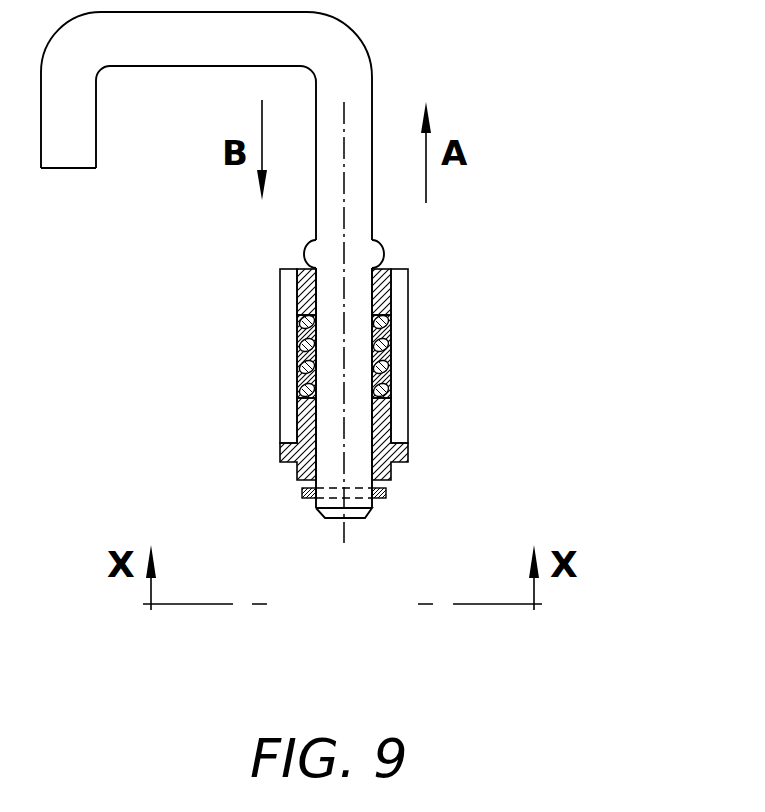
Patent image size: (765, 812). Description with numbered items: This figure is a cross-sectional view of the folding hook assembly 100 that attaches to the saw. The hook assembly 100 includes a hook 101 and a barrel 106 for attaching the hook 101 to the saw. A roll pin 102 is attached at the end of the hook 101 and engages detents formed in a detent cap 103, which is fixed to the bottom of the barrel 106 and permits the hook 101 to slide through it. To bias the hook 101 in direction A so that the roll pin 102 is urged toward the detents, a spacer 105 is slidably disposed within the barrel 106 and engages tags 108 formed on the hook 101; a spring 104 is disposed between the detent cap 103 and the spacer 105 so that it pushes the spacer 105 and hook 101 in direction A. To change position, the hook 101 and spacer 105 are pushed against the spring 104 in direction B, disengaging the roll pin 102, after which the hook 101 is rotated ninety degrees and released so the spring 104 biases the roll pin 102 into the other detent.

The hook assembly 100 is at (458, 402).
The hook 101 is at (332, 52).
The roll pin 102 is at (385, 494).
The detent cap 103 is at (295, 450).
The spring 104 is at (303, 372).
The spacer 105 is at (300, 295).
The barrel 106 is at (408, 309).
The tags 108 is at (380, 256).